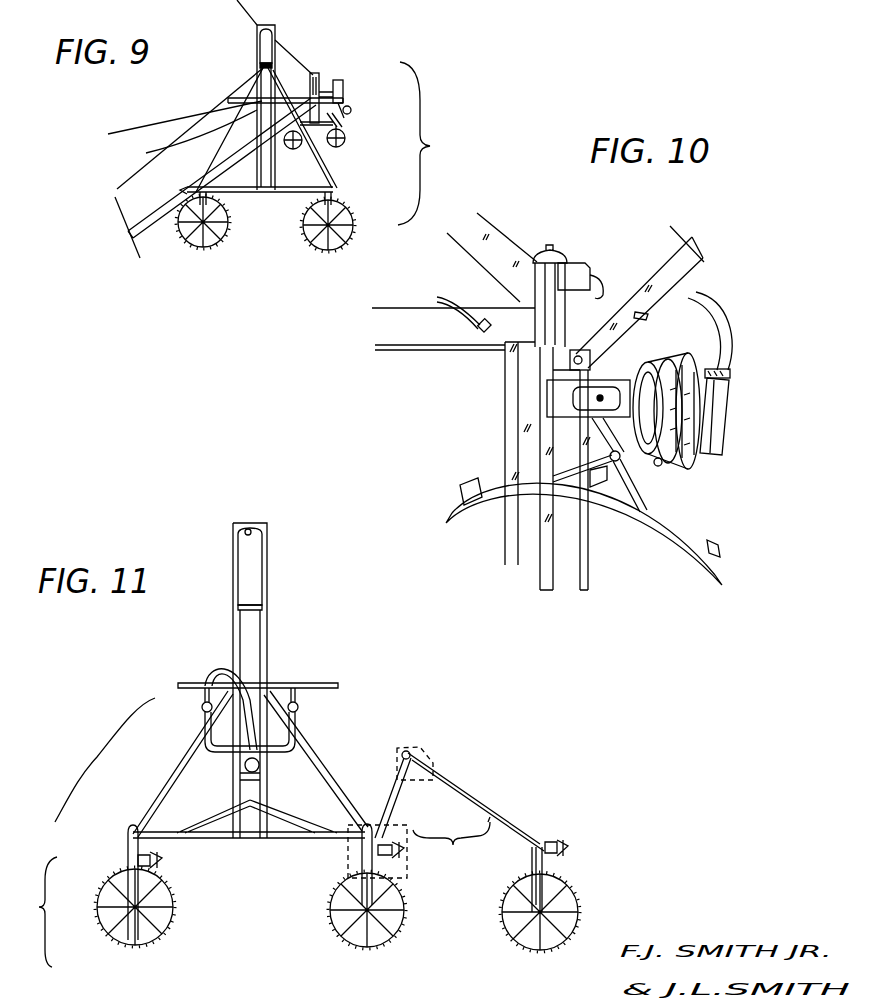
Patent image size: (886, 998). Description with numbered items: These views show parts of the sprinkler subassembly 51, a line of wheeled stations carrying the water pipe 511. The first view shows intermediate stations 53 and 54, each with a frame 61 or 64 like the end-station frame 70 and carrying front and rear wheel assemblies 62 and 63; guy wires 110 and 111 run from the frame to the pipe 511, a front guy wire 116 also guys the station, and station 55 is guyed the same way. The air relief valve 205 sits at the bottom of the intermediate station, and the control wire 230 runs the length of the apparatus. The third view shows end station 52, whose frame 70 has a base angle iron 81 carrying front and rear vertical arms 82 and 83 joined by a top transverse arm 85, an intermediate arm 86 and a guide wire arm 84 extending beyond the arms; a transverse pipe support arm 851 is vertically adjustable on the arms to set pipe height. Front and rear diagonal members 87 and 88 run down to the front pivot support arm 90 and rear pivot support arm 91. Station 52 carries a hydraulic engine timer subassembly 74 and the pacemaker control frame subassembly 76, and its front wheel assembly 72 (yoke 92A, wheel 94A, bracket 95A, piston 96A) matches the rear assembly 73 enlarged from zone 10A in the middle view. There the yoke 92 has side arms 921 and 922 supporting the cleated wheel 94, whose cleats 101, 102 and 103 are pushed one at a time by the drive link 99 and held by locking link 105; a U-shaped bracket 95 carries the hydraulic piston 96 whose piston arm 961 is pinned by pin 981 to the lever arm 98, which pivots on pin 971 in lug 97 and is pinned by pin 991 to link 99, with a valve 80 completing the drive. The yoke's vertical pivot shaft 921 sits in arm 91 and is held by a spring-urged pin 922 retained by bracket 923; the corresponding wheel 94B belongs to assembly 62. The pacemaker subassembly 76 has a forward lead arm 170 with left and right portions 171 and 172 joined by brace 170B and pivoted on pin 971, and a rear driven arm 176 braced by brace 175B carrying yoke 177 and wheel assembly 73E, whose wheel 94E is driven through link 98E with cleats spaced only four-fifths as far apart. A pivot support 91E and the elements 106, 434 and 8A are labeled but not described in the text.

In FIG. 9, the control wire 230 is at (124, 128).
In FIG. 9, the air relief valve 205 is at (183, 137).
In FIG. 9, the guy wire 110 is at (128, 175).
In FIG. 9, the guy wire 111 is at (178, 190).
In FIG. 9, the pipe 511 is at (133, 215).
In FIG. 11, the pipe 511 is at (247, 766).
In FIG. 9, the front guy wire 116 is at (265, 177).
In FIG. 9, the front wheel assembly 62 is at (186, 245).
In FIG. 9, the rear wheel assembly 63 is at (320, 245).
In FIG. 9, the frame 61 is at (240, 112).
In FIG. 9, the frame 64 is at (317, 75).
In FIG. 9, the station 55 is at (351, 89).
In FIG. 9, the intermediate station 54 is at (355, 128).
In FIG. 9, the intermediate station 53 is at (373, 220).
In FIG. 9, the sprinkler subassembly 51 is at (427, 143).
In FIG. 10, the rear diagonal support member 88 is at (477, 232).
In FIG. 11, the rear diagonal support member 88 is at (297, 732).
In FIG. 10, the vertical cylindrical pivot shaft 921 is at (550, 247).
In FIG. 10, the U-shaped bracket 923 is at (577, 267).
In FIG. 10, the pin 922 is at (598, 330).
In FIG. 10, the rear vertical pivot support arm 91 is at (537, 303).
In FIG. 11, the rear vertical pivot support arm 91 is at (367, 827).
In FIG. 10, the pin 971 is at (598, 305).
In FIG. 10, the U-shaped lug 97 is at (578, 350).
In FIG. 10, the left portion of lead arm 171 is at (695, 262).
In FIG. 10, the right portion of lead arm 172 is at (655, 285).
In FIG. 10, the forward lead arm 170 is at (713, 297).
In FIG. 11, the forward lead arm 170 is at (402, 800).
In FIG. 10, the hose clamp 106 is at (717, 303).
In FIG. 10, the brace 170B is at (645, 316).
In FIG. 10, the piston arm 961 is at (640, 367).
In FIG. 10, the hydraulic piston 96 is at (700, 370).
In FIG. 10, the pin 981 is at (600, 398).
In FIG. 10, the valve 80 is at (718, 418).
In FIG. 10, the U-shaped bracket 95 is at (560, 400).
In FIG. 10, the base angle iron member 81 is at (423, 340).
In FIG. 11, the base angle iron member 81 is at (270, 838).
In FIG. 10, the yoke 92 is at (501, 412).
In FIG. 11, the yoke 92 is at (320, 874).
In FIG. 10, the locking link 105 is at (498, 480).
In FIG. 10, the cleat 101 is at (477, 490).
In FIG. 10, the drive link 99 is at (575, 467).
In FIG. 10, the cleat 102 is at (593, 485).
In FIG. 10, the lever arm 98 is at (622, 440).
In FIG. 10, the pin 991 is at (642, 510).
In FIG. 10, the cleat 103 is at (645, 527).
In FIG. 10, the cleated wheel 94B is at (692, 530).
In FIG. 10, the cleated wheel 94 is at (718, 570).
In FIG. 11, the cleated wheel 94 is at (400, 917).
In FIG. 10, the arc 434 is at (693, 564).
In FIG. 11, the top transverse arm 85 is at (250, 522).
In FIG. 11, the intermediate transverse arm 86 is at (253, 605).
In FIG. 11, the front arm 82 is at (233, 627).
In FIG. 11, the rear arm 83 is at (263, 637).
In FIG. 11, the hydraulic engine timer subassembly 74 is at (212, 668).
In FIG. 11, the middle transverse guide wire arm 84 is at (307, 683).
In FIG. 11, the front diagonal support member 87 is at (187, 755).
In FIG. 11, the transverse pipe support arm 851 is at (257, 778).
In FIG. 11, the frame 70 is at (105, 760).
In FIG. 11, the front vertical pivot support arm 90 is at (132, 823).
In FIG. 11, the front wheel assembly 72 is at (167, 963).
In FIG. 11, the yoke 92A is at (117, 880).
In FIG. 11, the cleated wheel 94A is at (103, 905).
In FIG. 11, the U-shaped bracket 95A is at (107, 933).
In FIG. 11, the hydraulic piston 96A is at (163, 863).
In FIG. 11, the end station 52 is at (380, 658).
In FIG. 11, the pivot 8A is at (437, 752).
In FIG. 11, the rear driven arm 176 is at (483, 810).
In FIG. 11, the pacemaker control frame subassembly 76 is at (451, 846).
In FIG. 11, the zone 10A is at (412, 859).
In FIG. 11, the rear wheel assembly 73 is at (340, 943).
In FIG. 11, the pacemaker wheel assembly 73E is at (497, 930).
In FIG. 11, the brace 175B is at (528, 840).
In FIG. 11, the coupling 91E is at (563, 831).
In FIG. 11, the link 98E is at (563, 857).
In FIG. 11, the yoke 177 is at (540, 887).
In FIG. 11, the wheel 94E is at (577, 923).